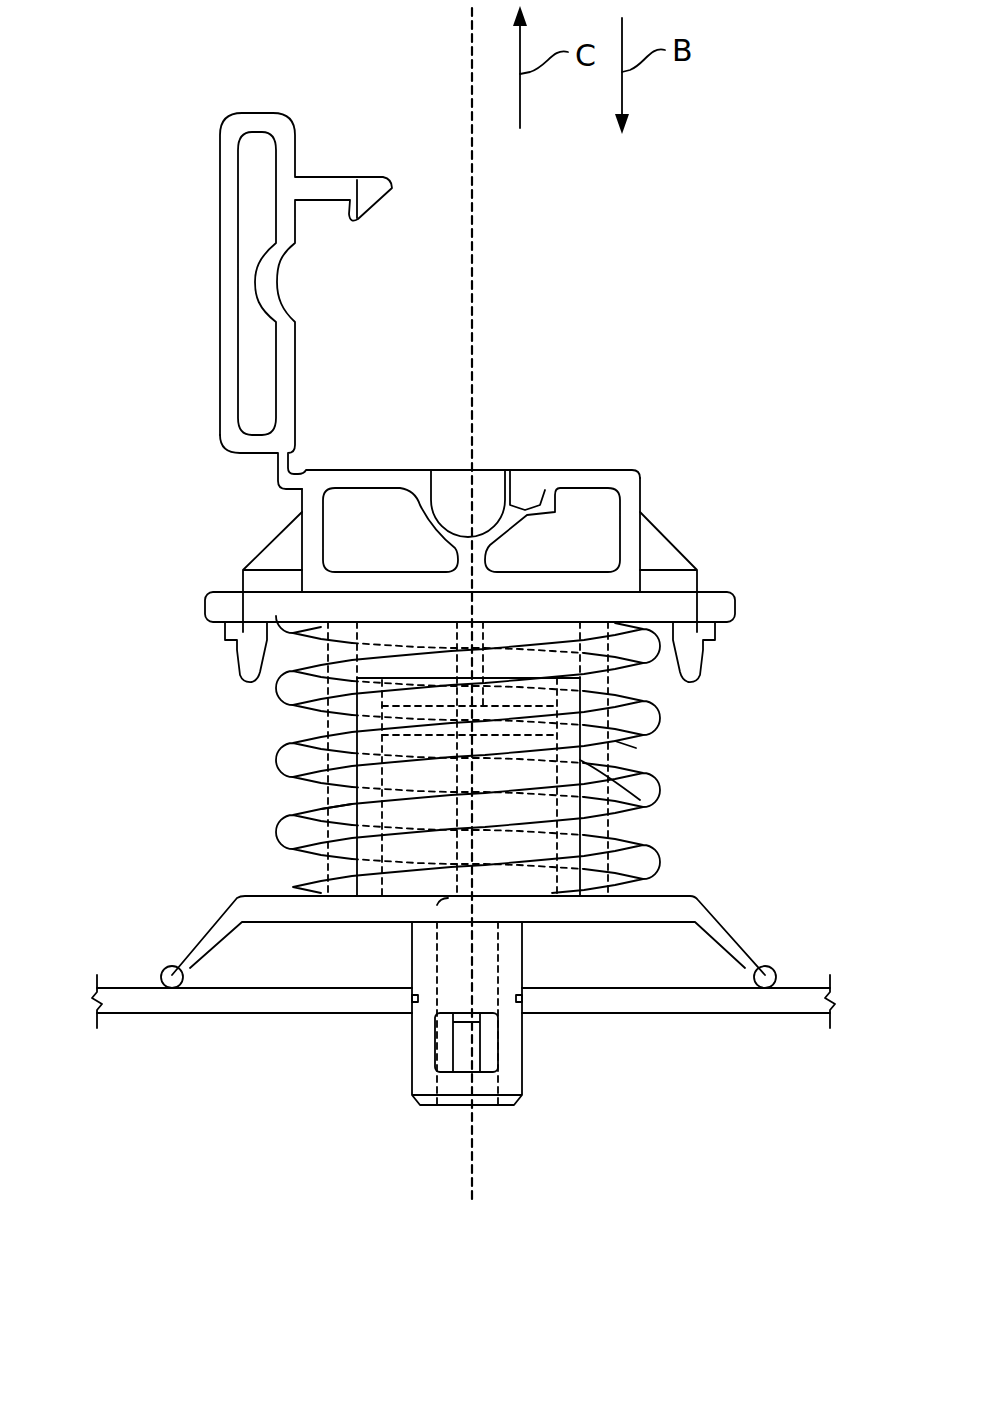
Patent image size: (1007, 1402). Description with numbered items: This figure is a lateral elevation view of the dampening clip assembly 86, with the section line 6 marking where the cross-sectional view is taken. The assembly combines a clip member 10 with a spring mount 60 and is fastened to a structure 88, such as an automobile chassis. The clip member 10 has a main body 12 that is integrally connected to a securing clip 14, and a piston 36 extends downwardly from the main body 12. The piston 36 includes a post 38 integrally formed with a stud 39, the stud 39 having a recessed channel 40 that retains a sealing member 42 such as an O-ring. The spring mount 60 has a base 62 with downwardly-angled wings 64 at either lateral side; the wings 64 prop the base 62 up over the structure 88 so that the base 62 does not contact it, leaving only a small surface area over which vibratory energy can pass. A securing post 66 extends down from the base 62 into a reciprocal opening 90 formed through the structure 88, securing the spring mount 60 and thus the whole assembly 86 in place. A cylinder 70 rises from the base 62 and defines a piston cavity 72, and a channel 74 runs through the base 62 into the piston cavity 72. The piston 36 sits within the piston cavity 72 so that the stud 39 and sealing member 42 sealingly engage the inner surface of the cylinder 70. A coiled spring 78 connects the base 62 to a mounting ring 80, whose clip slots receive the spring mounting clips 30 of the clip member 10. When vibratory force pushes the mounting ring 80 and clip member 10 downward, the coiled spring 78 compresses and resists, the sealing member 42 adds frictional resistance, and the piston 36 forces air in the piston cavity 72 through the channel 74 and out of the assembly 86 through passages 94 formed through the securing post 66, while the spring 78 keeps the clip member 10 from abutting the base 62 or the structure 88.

The section line 6- 6 is at (472, 8).
The clip member 10 is at (650, 466).
The main body 12 is at (553, 506).
The securing clip 14 is at (220, 360).
The spring mounting clips 30 is at (225, 650).
The piston 36 is at (445, 652).
The post 38 is at (460, 655).
The stud 39 is at (572, 700).
The recessed channel 40 is at (638, 798).
The sealing member 42 is at (335, 738).
The spring mount 60 is at (730, 903).
The base 62 is at (255, 897).
The wings 64 is at (192, 935).
The securing post 66 is at (523, 940).
The cylinder 70 is at (636, 748).
The piston cavity 72 is at (340, 818).
The channel 74 is at (452, 908).
The coiled spring 78 is at (648, 800).
The mounting ring 80 is at (205, 602).
The dampening clip assembly 86 is at (144, 40).
The structure 88 is at (795, 1022).
The reciprocal opening 90 is at (532, 1000).
The passages 94 is at (450, 997).